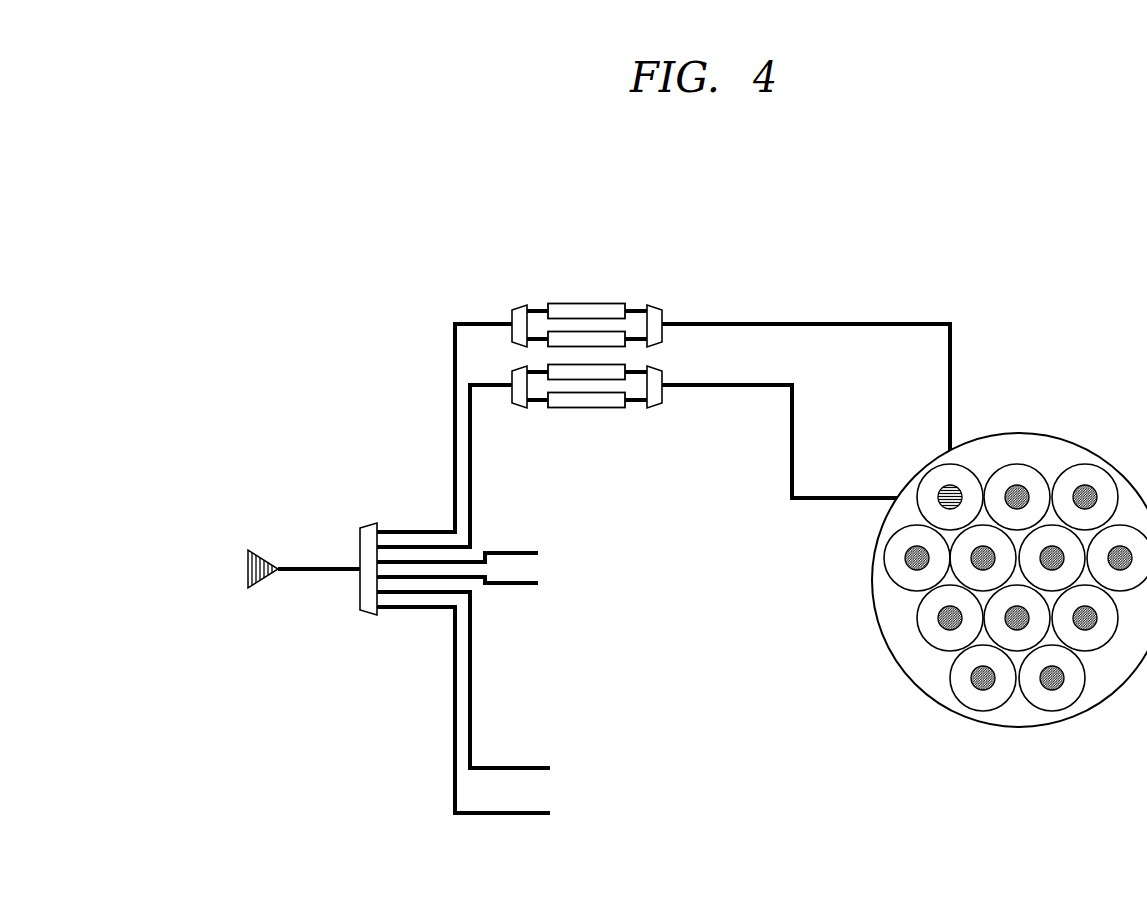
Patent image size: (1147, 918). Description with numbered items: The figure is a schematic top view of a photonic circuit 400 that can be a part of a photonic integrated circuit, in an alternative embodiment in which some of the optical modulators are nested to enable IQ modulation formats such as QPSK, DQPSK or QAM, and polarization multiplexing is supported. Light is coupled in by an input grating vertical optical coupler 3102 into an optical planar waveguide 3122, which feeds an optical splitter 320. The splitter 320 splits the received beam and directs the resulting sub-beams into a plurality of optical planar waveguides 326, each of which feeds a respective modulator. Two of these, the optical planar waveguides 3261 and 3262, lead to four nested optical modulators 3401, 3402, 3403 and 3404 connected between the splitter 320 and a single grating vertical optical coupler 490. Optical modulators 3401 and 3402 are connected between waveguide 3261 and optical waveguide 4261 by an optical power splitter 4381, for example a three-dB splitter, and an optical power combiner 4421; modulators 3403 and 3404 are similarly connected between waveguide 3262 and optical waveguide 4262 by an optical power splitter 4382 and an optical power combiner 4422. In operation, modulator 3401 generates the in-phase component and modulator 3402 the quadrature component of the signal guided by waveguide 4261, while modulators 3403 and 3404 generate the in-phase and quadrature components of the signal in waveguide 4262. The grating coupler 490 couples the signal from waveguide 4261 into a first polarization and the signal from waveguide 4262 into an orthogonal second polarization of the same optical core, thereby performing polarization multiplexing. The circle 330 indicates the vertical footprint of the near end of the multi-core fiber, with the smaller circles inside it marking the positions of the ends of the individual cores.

The photonic circuit 400 is at (725, 147).
The input grating vertical optical coupler 3102 is at (248, 568).
The optical planar waveguide 3122 is at (300, 571).
The optical splitter 320 is at (374, 525).
The optical planar waveguides 326 is at (413, 635).
The optical planar waveguide 3261 is at (455, 425).
The optical waveguide 3262 is at (476, 485).
The optical power splitter 4381 is at (518, 305).
The optical power splitter 4382 is at (520, 408).
The optical modulator 3401 is at (565, 303).
The optical modulator 3402 is at (606, 332).
The optical modulator 3403 is at (585, 409).
The optical modulator 3404 is at (598, 362).
The optical power combiner 4421 is at (652, 305).
The optical power combiner 4422 is at (653, 408).
The optical planar waveguide 4261 is at (795, 323).
The optical waveguide 4262 is at (792, 437).
The circle 330 is at (1067, 443).
The grating vertical optical coupler 490 is at (954, 490).